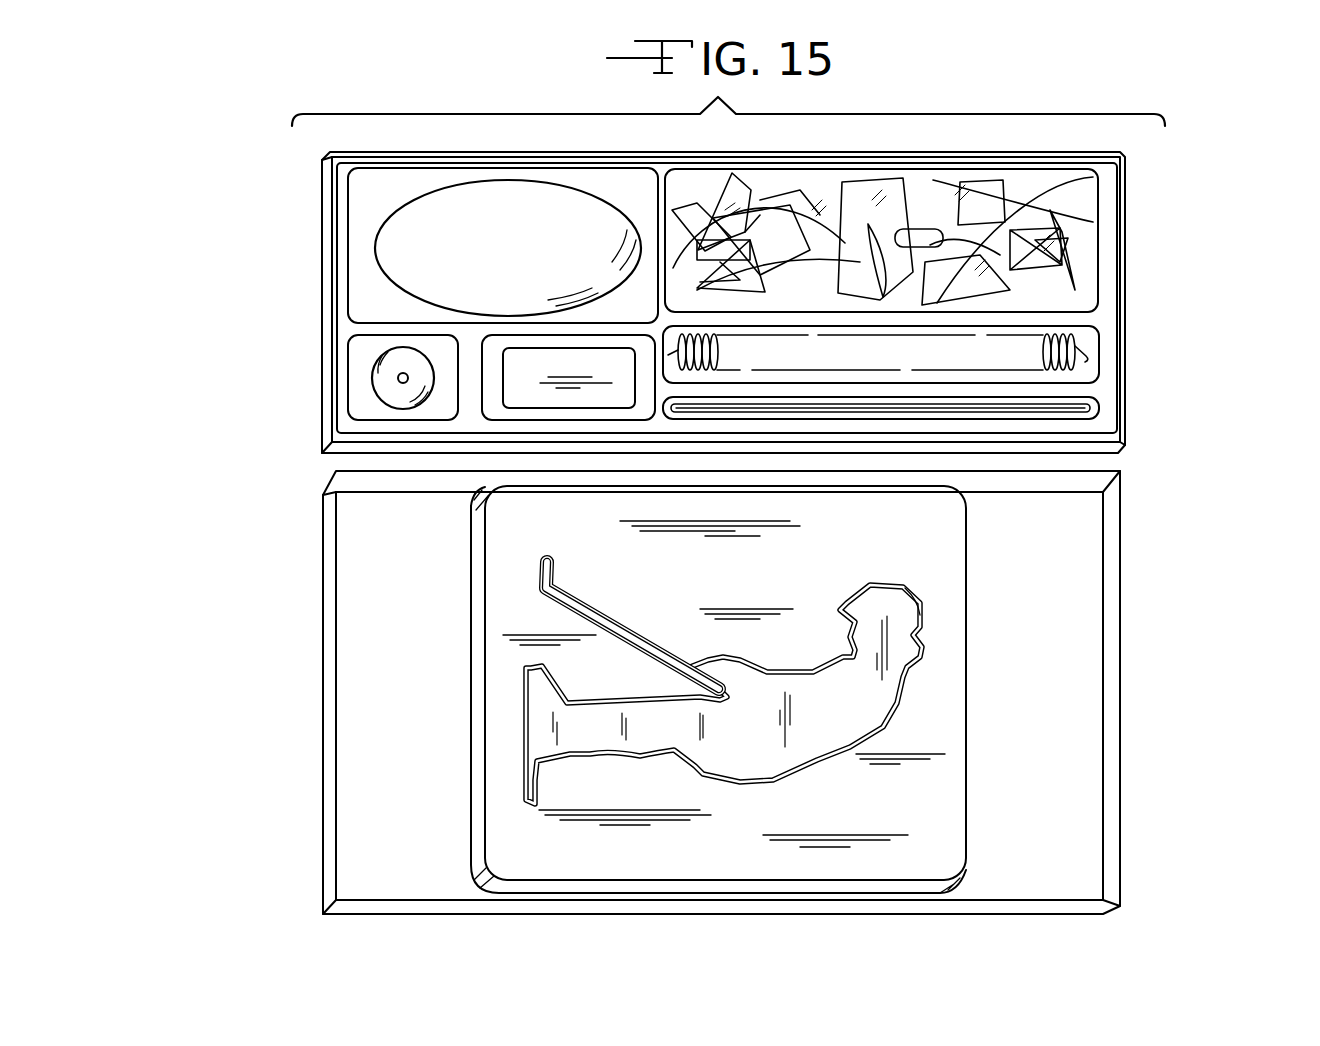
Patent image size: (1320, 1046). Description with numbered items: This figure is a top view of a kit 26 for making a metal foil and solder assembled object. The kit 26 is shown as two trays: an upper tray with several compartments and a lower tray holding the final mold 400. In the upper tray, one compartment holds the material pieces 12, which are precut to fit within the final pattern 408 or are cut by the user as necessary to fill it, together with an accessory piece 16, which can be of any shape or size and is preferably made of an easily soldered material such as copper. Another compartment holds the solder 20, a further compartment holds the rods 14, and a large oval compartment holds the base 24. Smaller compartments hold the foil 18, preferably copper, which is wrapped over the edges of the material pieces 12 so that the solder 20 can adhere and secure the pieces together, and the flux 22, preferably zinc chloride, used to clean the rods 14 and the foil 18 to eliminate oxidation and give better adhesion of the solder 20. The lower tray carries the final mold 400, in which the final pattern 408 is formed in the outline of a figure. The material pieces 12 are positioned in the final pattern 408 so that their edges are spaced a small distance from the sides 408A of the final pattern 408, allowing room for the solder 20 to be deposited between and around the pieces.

The material pieces 12 is at (1080, 193).
The rods 14 is at (1098, 406).
The accessory pieces 16 is at (1067, 249).
The foil 18 is at (372, 391).
The solder 20 is at (1075, 346).
The flux 22 is at (502, 396).
The base 24 is at (375, 269).
The kit 26 is at (1166, 299).
The final mold 400 is at (938, 698).
The final pattern 408 is at (893, 643).
The sides of the final pattern 408A is at (921, 605).